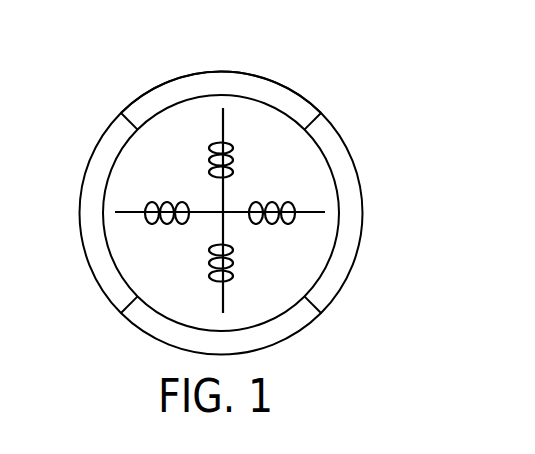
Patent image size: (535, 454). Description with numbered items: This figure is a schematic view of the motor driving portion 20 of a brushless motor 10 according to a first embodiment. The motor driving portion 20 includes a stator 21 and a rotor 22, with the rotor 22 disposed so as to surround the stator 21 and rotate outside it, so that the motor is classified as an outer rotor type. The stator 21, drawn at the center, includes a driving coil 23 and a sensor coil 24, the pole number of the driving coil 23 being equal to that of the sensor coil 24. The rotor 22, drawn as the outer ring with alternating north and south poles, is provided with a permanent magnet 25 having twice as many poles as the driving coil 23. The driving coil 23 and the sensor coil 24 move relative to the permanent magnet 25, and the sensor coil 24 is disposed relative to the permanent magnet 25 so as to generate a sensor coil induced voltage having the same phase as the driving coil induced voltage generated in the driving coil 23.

The brushless motor 10 is at (387, 55).
The motor driving portion 20 is at (361, 118).
The stator 21 is at (201, 196).
The rotor 22 is at (363, 211).
The driving coil 23 is at (234, 164).
The sensor coil 24 is at (271, 226).
The permanent magnet 25 is at (268, 93).